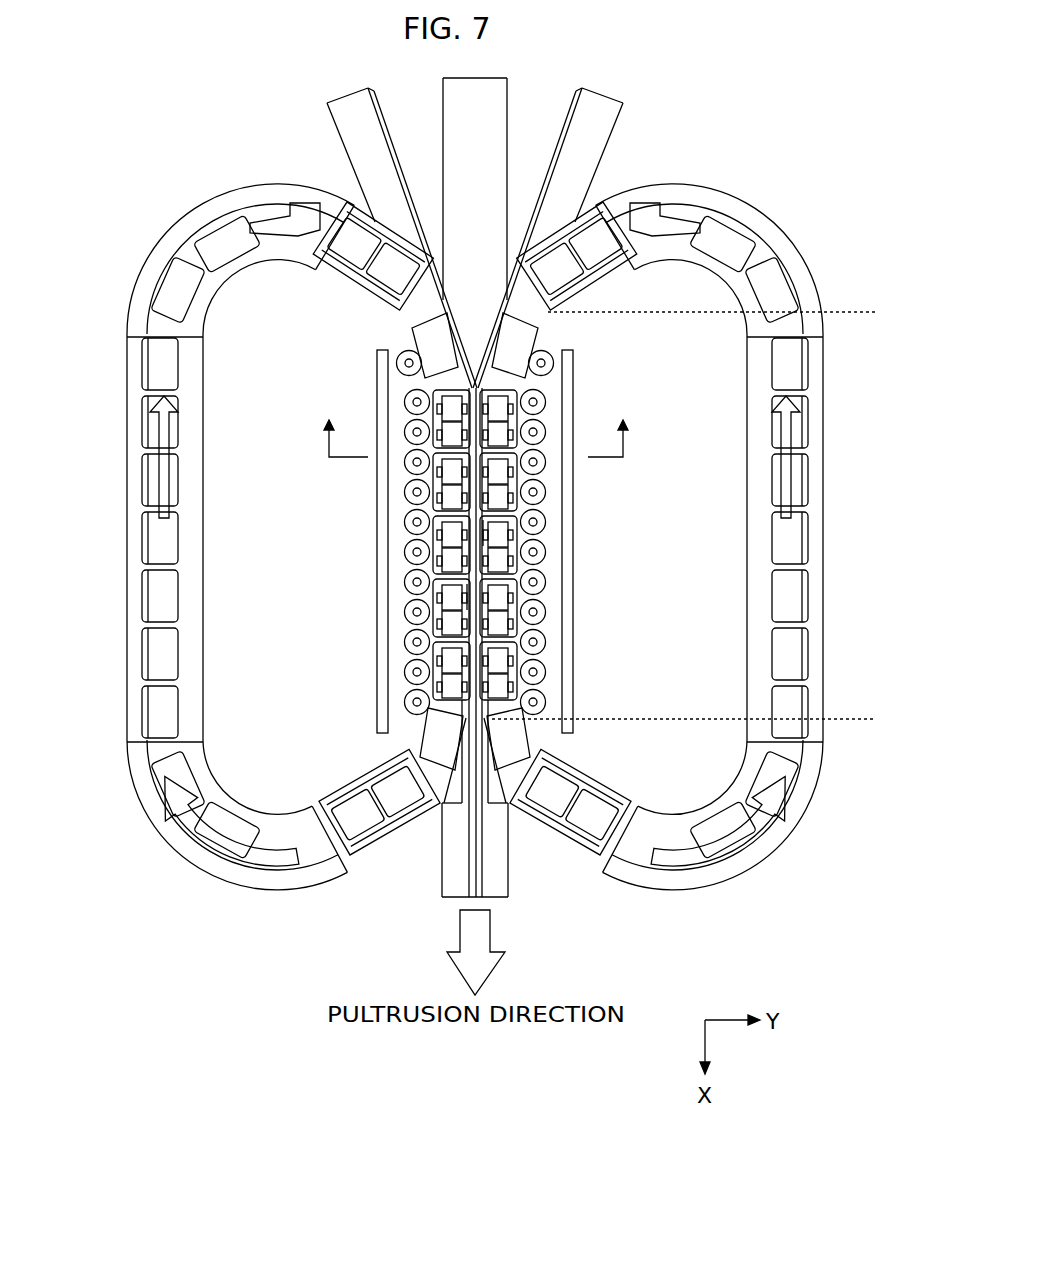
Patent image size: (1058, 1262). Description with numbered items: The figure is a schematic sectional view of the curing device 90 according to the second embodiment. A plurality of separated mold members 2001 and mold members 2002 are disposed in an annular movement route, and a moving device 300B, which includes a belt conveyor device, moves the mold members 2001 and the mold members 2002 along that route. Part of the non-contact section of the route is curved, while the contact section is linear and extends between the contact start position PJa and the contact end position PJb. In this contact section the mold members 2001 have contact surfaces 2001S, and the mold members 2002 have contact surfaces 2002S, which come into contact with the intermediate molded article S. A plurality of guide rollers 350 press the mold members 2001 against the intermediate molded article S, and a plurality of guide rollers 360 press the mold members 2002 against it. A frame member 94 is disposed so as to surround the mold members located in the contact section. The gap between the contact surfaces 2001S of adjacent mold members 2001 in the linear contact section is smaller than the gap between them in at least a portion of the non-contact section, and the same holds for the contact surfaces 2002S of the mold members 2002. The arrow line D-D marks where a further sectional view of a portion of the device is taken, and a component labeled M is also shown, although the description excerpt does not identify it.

The curing device 90 is at (473, 515).
The moving device 300B is at (120, 294).
The mold member 2002 is at (137, 546).
The mold member 2001 is at (815, 460).
The guide rollers 360 is at (405, 582).
The guide rollers 350 is at (545, 582).
The frame member 94 is at (568, 489).
The contact surface 2001S is at (472, 533).
The contact surface 2002S is at (478, 596).
The intermediate molded article S is at (336, 137).
The core / mandrel material M is at (512, 880).
The contact start position PJa is at (731, 314).
The contact end position PJb is at (704, 722).
The arrow line D- D is at (473, 425).